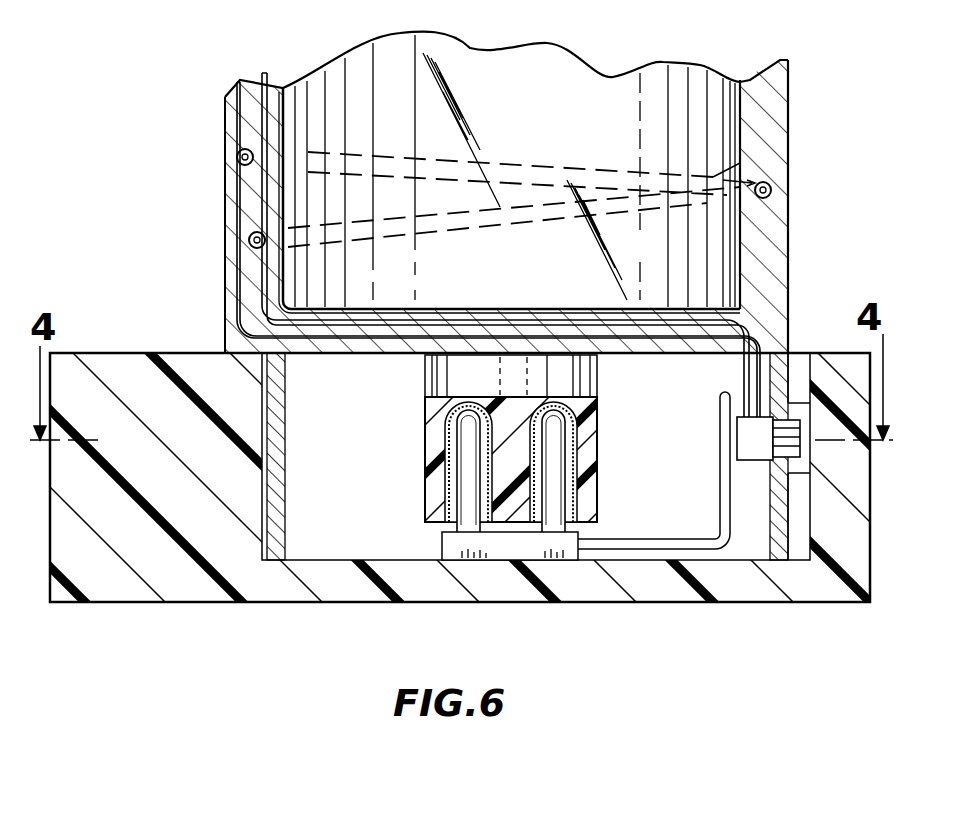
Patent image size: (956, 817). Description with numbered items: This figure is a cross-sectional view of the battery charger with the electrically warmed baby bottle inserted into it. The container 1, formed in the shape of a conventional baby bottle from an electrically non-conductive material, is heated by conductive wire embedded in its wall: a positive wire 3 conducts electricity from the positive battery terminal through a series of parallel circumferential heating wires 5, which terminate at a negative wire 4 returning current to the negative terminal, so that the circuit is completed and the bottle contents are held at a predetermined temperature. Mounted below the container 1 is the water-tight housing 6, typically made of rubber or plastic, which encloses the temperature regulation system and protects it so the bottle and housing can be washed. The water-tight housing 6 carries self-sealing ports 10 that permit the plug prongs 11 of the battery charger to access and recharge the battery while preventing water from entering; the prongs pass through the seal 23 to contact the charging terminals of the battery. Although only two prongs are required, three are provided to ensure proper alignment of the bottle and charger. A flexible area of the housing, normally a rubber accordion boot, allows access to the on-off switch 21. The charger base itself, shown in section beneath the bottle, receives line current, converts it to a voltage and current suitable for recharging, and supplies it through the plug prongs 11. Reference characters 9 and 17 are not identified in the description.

The container 1 is at (790, 95).
The positive wire 3 is at (240, 205).
The negative wire 4 is at (263, 278).
The circumferential heating wires 5 is at (740, 163).
The water-tight housing 6 is at (263, 541).
The lamp 9 is at (432, 442).
The self-sealing ports 10 is at (578, 438).
The plug prongs 11 is at (585, 527).
The base 17 is at (828, 595).
The on-off switch 21 is at (750, 453).
The seal 23 is at (443, 498).